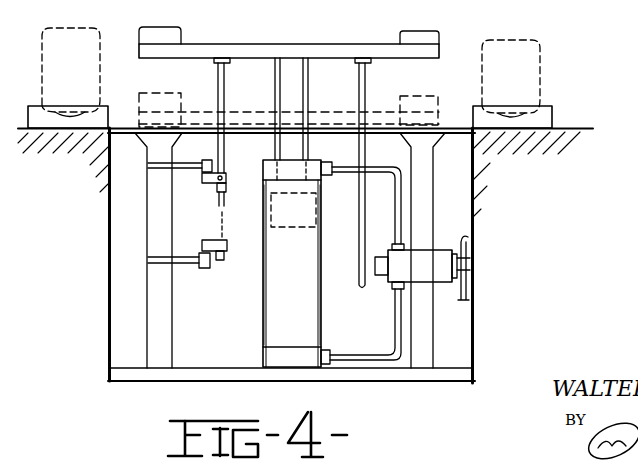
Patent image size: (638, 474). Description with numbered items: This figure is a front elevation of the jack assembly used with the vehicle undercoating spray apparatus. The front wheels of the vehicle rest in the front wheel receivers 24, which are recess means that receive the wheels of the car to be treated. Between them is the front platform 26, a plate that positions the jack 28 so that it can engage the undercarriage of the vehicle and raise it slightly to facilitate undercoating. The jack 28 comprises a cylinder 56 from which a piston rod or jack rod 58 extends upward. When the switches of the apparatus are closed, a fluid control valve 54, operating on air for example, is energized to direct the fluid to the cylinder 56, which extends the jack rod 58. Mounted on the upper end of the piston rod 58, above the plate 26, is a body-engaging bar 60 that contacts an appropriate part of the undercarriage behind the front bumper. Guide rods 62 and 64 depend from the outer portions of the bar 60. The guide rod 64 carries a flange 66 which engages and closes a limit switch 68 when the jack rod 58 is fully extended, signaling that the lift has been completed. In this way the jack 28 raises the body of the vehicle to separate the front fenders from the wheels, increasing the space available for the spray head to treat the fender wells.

The front wheel receivers 24 is at (533, 112).
The front platform 26 is at (550, 128).
The jack 28 is at (256, 322).
The control valve 54 is at (436, 283).
The cylinder 56 is at (321, 312).
The piston rod 58 is at (276, 92).
The body-engaging bar 60 is at (238, 44).
The guide rod 62 is at (359, 230).
The guide rod 64 is at (214, 206).
The flange 66 is at (226, 179).
The limit switch 68 is at (203, 172).